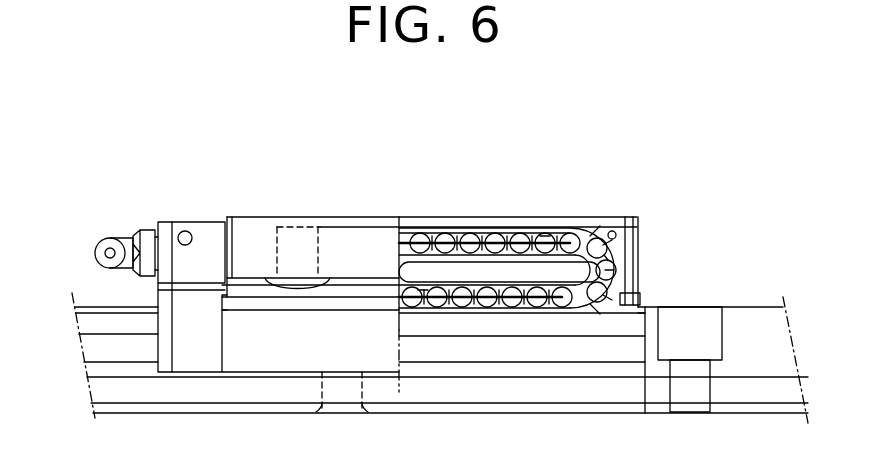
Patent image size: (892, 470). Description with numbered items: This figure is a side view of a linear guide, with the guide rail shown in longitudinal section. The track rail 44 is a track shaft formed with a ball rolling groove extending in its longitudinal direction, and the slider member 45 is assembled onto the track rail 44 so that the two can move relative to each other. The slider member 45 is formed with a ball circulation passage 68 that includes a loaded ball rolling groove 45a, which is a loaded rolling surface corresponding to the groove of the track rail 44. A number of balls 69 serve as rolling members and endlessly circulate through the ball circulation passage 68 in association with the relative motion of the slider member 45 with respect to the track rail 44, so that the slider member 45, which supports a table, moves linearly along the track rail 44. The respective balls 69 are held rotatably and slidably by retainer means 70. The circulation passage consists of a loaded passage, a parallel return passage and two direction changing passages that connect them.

The track rail 44 is at (748, 318).
The slider member 45 is at (342, 240).
The loaded ball rolling groove 45a is at (537, 285).
The ball circulation passage 68 is at (552, 232).
The balls 69 is at (420, 238).
The retainer means 70 is at (480, 238).